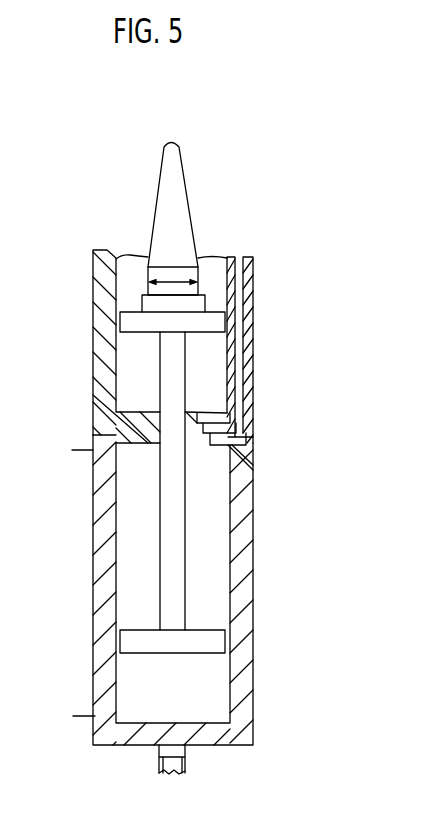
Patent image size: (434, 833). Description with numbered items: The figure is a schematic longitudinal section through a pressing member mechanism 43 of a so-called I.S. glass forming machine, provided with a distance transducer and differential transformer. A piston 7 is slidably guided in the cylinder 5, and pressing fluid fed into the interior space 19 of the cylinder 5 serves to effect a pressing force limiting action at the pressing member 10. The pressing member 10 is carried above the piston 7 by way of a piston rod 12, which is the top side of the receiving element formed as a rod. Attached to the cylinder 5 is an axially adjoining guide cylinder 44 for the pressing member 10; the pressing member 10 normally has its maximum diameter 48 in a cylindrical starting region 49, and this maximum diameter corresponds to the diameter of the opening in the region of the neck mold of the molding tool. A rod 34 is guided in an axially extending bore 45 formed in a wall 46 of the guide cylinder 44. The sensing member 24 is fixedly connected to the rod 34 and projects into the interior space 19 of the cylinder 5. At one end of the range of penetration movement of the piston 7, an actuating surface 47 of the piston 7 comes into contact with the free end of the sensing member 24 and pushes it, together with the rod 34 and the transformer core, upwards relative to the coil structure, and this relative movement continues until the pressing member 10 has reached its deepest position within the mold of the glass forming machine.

The pressing member mechanism 43 is at (71, 162).
The pressing member 10 is at (183, 161).
The maximum diameter 48 is at (175, 283).
The cylindrical starting region 49 is at (148, 271).
The rod 34 is at (240, 289).
The guide cylinder 44 is at (92, 318).
The wall 46 is at (102, 360).
The bore 45 is at (244, 352).
The sensing member 24 is at (204, 447).
The interior space 19 is at (212, 525).
The piston rod 12 is at (176, 558).
The actuating surface 47 is at (213, 628).
The piston 7 is at (213, 645).
The cylinder 5 is at (253, 684).